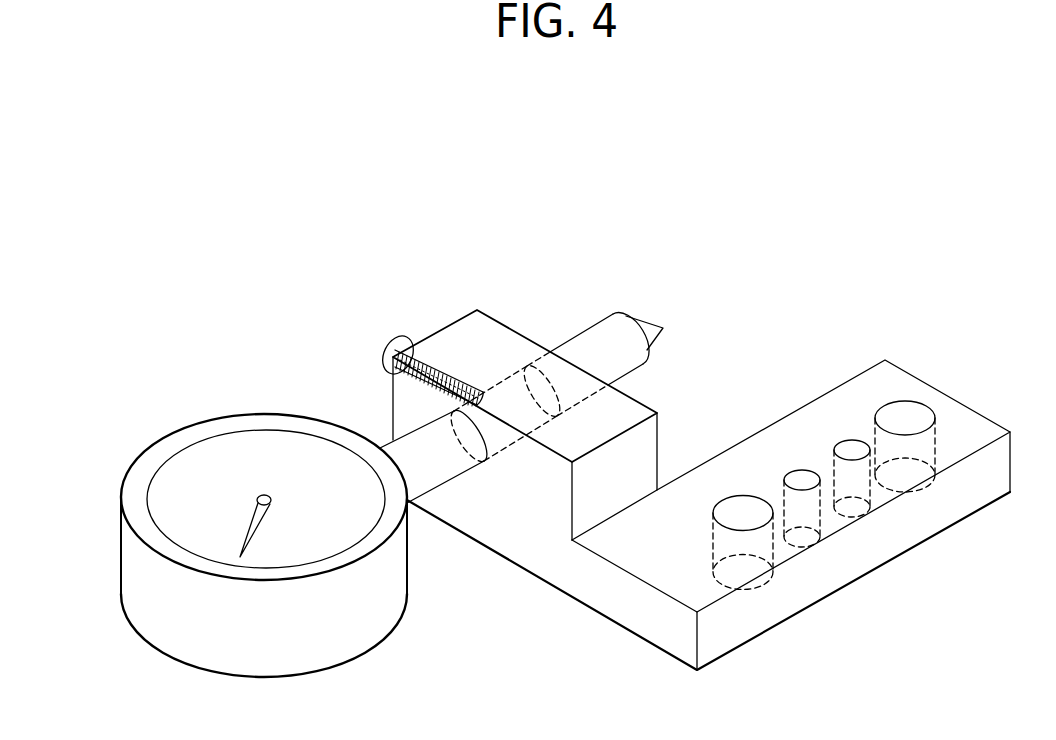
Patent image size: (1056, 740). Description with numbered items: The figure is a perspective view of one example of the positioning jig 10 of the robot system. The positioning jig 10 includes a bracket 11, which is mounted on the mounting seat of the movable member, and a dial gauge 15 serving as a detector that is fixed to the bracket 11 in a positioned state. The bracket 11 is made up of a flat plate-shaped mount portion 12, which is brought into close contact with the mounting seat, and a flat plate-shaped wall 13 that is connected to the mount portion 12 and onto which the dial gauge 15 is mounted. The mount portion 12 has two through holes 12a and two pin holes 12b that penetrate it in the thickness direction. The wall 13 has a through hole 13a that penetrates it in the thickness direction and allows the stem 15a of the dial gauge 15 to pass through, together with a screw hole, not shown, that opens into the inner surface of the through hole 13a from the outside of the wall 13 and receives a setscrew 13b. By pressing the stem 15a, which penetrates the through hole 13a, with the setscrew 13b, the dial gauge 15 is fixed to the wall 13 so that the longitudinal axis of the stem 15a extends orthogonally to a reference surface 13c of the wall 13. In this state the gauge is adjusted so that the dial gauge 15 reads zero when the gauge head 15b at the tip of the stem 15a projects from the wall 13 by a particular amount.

The positioning jig 10 is at (223, 255).
The bracket 11 is at (764, 651).
The mount portion 12 is at (978, 397).
The through holes 12a is at (735, 507).
The pin holes 12b is at (802, 478).
The wall 13 is at (492, 302).
The through hole 13a is at (485, 431).
The setscrew 13b is at (391, 333).
The reference surface 13c is at (522, 333).
The dial gauge 15 is at (134, 446).
The stem 15a is at (381, 446).
The gauge head 15b is at (661, 318).